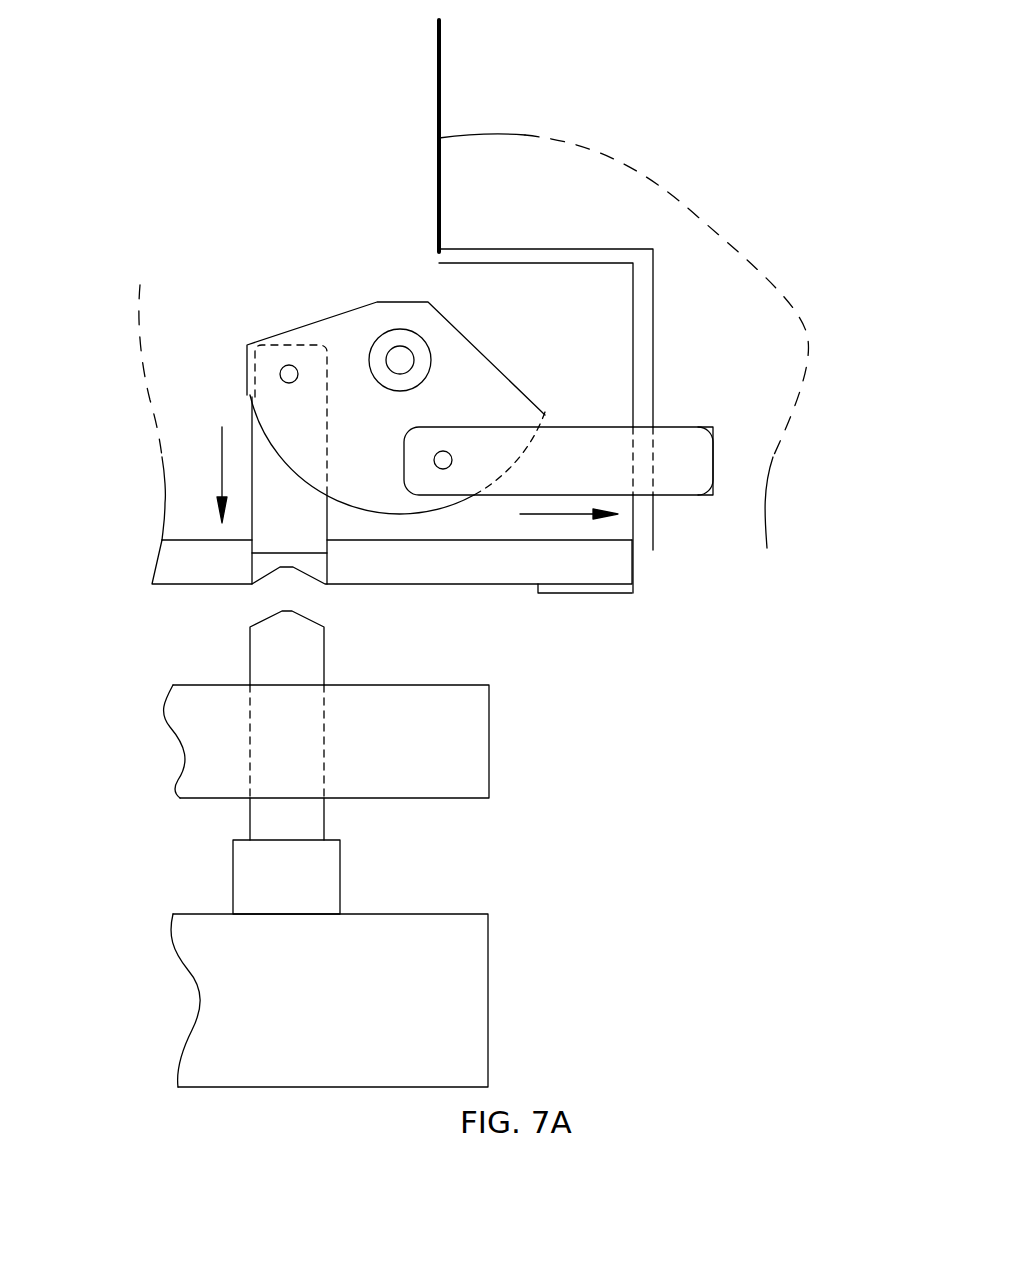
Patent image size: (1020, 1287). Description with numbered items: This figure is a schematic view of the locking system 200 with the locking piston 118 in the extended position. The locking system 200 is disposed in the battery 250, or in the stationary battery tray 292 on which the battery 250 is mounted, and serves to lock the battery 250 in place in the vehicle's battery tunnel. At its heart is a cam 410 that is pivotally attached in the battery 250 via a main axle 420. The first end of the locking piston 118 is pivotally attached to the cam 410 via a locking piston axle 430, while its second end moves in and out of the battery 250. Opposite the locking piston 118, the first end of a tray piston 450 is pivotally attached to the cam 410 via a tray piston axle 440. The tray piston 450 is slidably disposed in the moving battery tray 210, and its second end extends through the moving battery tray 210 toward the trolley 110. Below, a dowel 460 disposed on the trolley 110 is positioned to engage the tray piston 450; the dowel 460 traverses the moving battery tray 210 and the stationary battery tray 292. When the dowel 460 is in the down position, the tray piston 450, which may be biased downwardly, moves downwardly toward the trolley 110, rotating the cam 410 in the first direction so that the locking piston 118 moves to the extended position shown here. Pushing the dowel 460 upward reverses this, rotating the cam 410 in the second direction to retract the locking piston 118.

The locking system 200 is at (229, 172).
The battery 250 is at (157, 322).
The cam 410 is at (440, 325).
The main axle 420 is at (398, 346).
The locking piston axle 430 is at (443, 469).
The tray piston axle 440 is at (280, 374).
The tray piston 450 is at (265, 462).
The locking piston 118 is at (680, 443).
The stationary battery tray 292 is at (502, 562).
The dowel 460 is at (315, 668).
The moving battery tray 210 is at (472, 768).
The trolley 110 is at (455, 987).